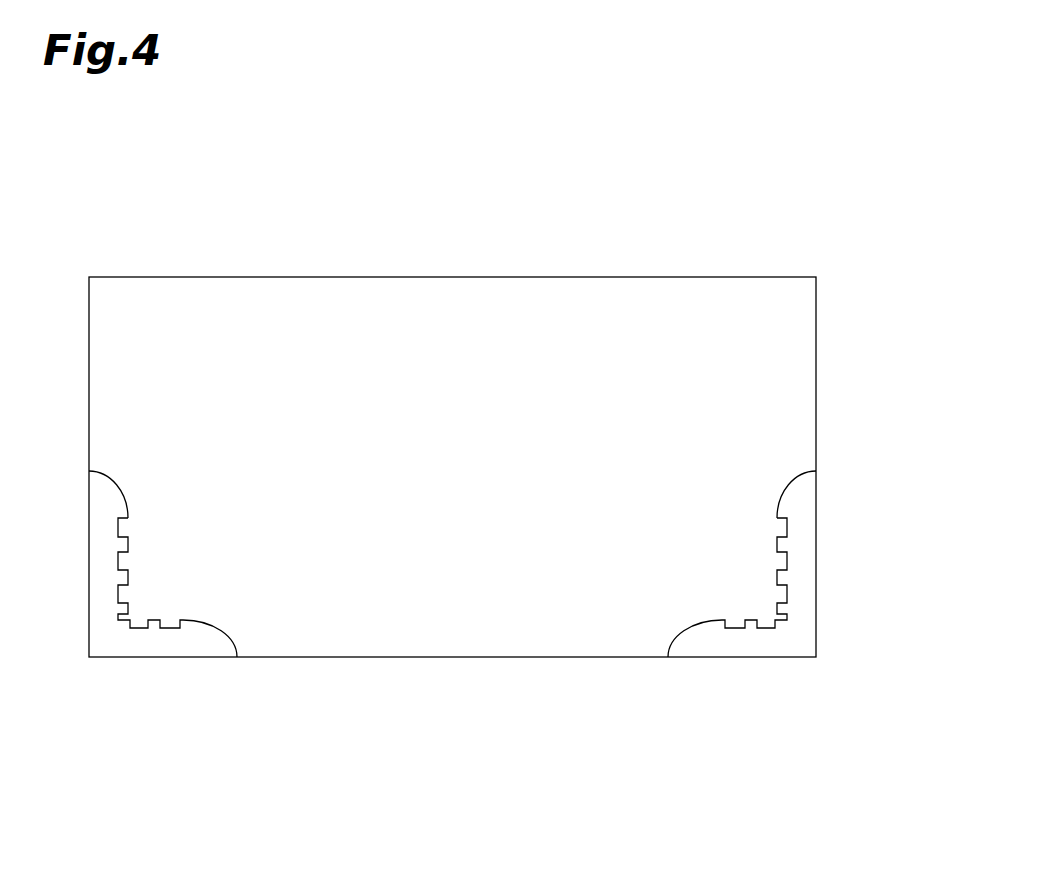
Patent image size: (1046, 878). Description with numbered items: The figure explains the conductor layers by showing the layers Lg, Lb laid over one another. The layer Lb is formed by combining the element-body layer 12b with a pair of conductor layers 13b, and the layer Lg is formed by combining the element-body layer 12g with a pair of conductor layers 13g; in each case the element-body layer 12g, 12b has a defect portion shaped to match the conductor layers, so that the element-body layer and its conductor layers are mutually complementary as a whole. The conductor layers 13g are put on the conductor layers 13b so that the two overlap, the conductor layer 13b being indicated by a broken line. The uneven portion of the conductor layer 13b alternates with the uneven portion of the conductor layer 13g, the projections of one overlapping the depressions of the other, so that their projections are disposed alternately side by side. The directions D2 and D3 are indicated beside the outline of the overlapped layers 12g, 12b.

The element-body layer 12g is at (525, 467).
The element-body layer 12b is at (816, 358).
The conductor layers 13g is at (456, 600).
The conductor layers 13b is at (150, 657).
The layer Lg is at (627, 224).
The layer Lb is at (582, 258).
The direction D2 is at (520, 786).
The direction D3 is at (889, 418).